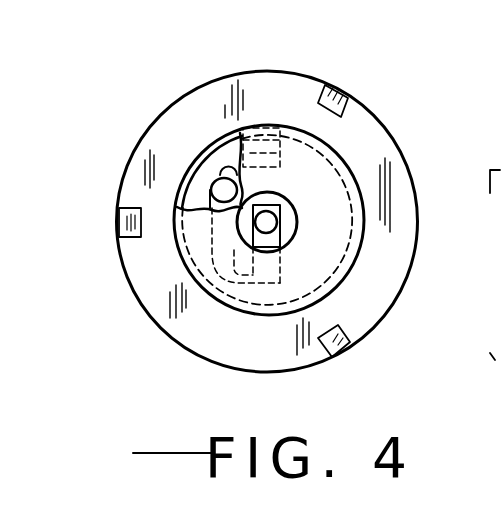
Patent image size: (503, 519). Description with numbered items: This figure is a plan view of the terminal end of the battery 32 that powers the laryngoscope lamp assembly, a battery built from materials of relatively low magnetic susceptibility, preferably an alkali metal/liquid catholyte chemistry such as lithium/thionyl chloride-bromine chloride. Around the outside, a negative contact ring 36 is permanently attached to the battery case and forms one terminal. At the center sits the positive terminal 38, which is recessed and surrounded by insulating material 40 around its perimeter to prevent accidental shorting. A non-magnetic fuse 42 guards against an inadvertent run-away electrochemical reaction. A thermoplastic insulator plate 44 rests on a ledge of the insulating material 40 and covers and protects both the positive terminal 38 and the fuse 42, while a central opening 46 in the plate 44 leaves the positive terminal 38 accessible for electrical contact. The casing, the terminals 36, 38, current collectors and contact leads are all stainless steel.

The battery 32 is at (278, 72).
The negative contact ring 36 is at (373, 177).
The positive terminal 38 is at (258, 218).
The insulating material 40 is at (221, 190).
The non-magnetic fuse 42 is at (212, 198).
The thermoplastic insulator plate 44 is at (312, 182).
The central opening 46 is at (297, 222).